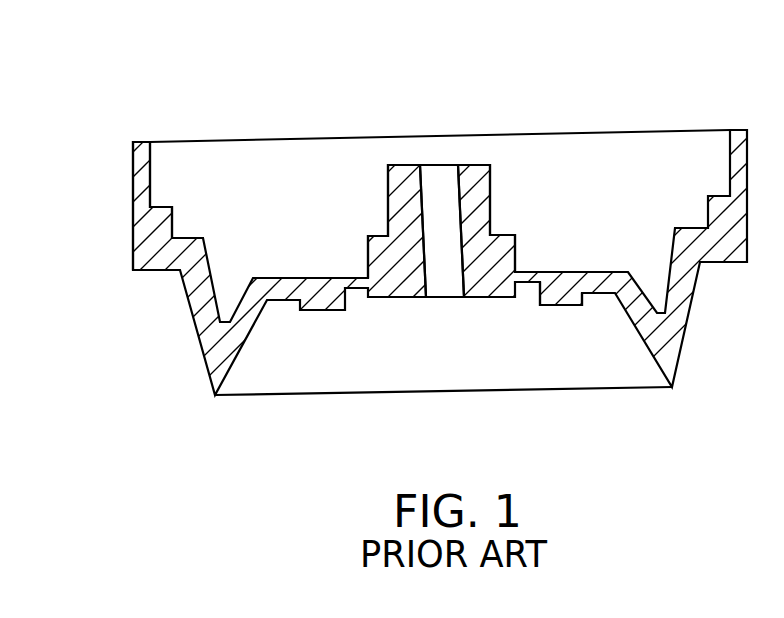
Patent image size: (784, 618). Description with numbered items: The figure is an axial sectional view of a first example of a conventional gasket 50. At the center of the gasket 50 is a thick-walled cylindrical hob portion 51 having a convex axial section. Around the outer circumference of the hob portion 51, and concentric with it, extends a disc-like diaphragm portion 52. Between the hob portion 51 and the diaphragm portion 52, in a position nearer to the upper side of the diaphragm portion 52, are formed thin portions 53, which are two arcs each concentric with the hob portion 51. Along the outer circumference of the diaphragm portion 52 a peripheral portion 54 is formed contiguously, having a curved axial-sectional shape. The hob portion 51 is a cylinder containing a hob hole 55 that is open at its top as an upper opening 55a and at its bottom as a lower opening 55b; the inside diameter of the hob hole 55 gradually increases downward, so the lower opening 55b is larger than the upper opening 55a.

The gasket 50 is at (222, 118).
The hob portion 51 is at (470, 168).
The diaphragm portion 52 is at (575, 305).
The thin portions 53 is at (528, 283).
The peripheral portion 54 is at (133, 155).
The hob hole 55 is at (424, 166).
The upper opening 55a is at (440, 165).
The lower opening 55b is at (432, 298).